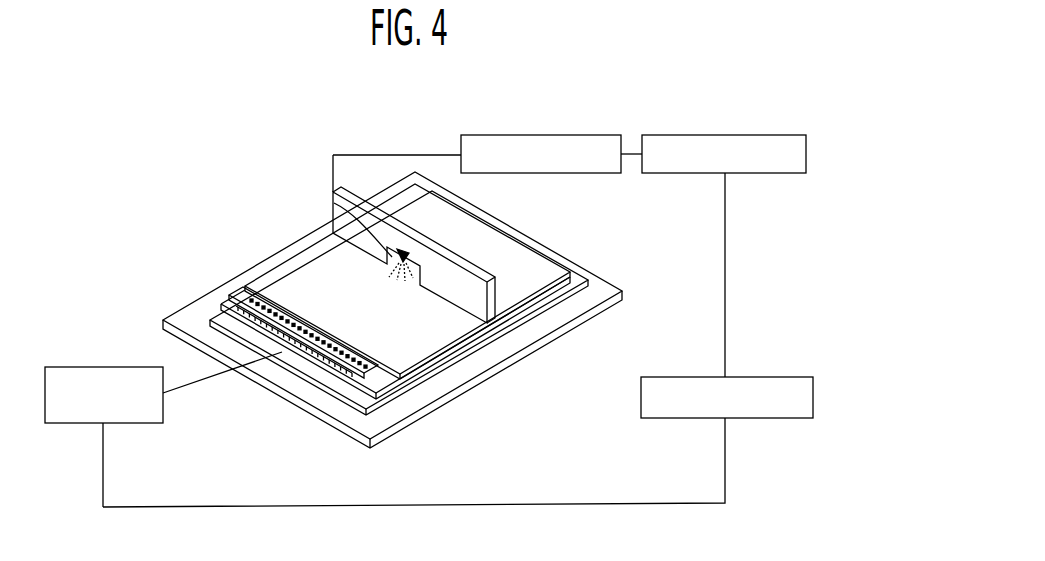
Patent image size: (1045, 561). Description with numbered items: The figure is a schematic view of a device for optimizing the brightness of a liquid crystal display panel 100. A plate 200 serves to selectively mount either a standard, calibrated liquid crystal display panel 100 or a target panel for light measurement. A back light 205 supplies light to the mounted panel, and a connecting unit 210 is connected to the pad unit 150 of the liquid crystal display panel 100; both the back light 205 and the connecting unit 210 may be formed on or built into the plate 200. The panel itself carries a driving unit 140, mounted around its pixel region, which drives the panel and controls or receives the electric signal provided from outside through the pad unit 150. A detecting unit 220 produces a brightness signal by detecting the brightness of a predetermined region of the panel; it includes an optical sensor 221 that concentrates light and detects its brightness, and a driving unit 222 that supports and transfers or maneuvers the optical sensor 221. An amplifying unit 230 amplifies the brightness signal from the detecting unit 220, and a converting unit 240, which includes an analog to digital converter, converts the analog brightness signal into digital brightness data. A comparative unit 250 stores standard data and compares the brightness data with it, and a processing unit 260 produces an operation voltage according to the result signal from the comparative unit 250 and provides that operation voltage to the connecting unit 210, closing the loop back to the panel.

The liquid crystal display panel 100 is at (287, 272).
The driving unit 140 is at (253, 313).
The pad unit 150 is at (222, 302).
The plate 200 is at (402, 423).
The back light 205 is at (563, 298).
The connecting unit 210 is at (222, 310).
The detecting unit 220 is at (277, 125).
The optical sensor 221 is at (330, 223).
The driving unit 222 is at (333, 203).
The amplifying unit 230 is at (556, 135).
The converting unit 240 is at (722, 135).
The comparative unit 250 is at (799, 377).
The processing unit 260 is at (88, 367).